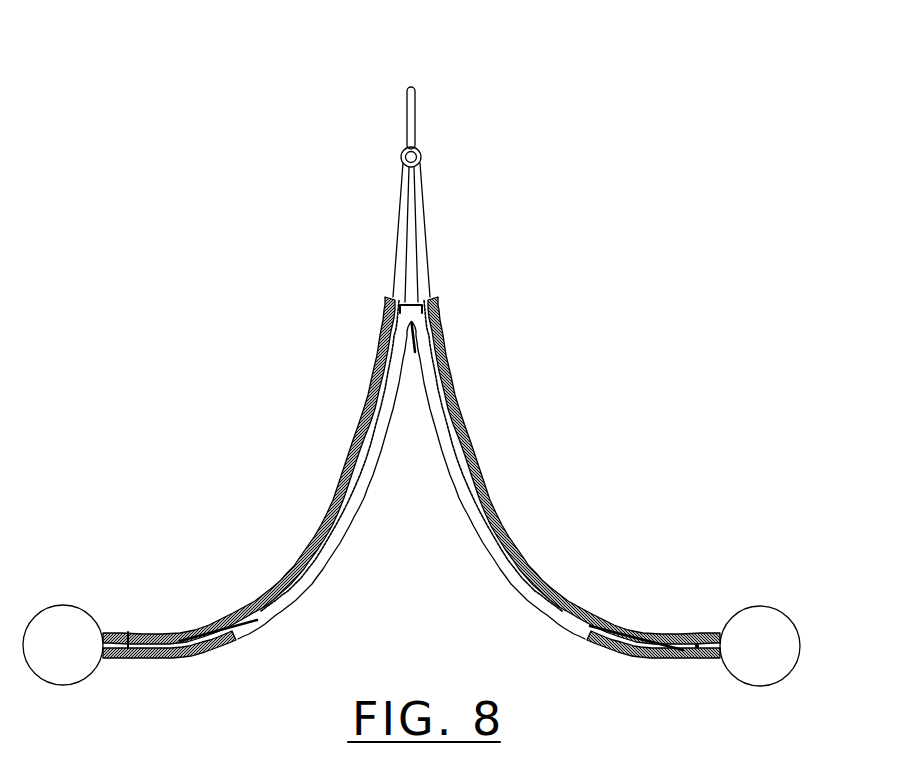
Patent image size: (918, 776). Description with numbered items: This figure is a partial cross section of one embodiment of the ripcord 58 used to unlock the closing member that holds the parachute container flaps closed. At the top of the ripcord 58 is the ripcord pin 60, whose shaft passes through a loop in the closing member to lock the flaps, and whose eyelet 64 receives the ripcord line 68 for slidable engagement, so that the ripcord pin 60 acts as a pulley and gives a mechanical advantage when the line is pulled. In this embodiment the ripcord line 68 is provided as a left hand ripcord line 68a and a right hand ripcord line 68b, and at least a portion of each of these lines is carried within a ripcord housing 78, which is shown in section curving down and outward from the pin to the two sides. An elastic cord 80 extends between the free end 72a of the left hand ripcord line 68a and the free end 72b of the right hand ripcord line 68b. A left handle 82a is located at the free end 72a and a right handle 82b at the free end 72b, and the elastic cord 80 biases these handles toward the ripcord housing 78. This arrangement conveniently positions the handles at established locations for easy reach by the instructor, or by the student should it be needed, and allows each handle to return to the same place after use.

The ripcord 58 is at (514, 134).
The ripcord pin 60 is at (426, 109).
The eyelet 64 is at (401, 153).
The ripcord line 68 is at (436, 218).
The left hand ripcord line 68a is at (327, 515).
The right hand ripcord line 68b is at (503, 537).
The free end 72a is at (155, 580).
The free end 72b is at (693, 634).
The ripcord housing 78 is at (443, 352).
The elastic cord 80 is at (462, 482).
The left handle 82a is at (51, 662).
The right handle 82b is at (750, 660).